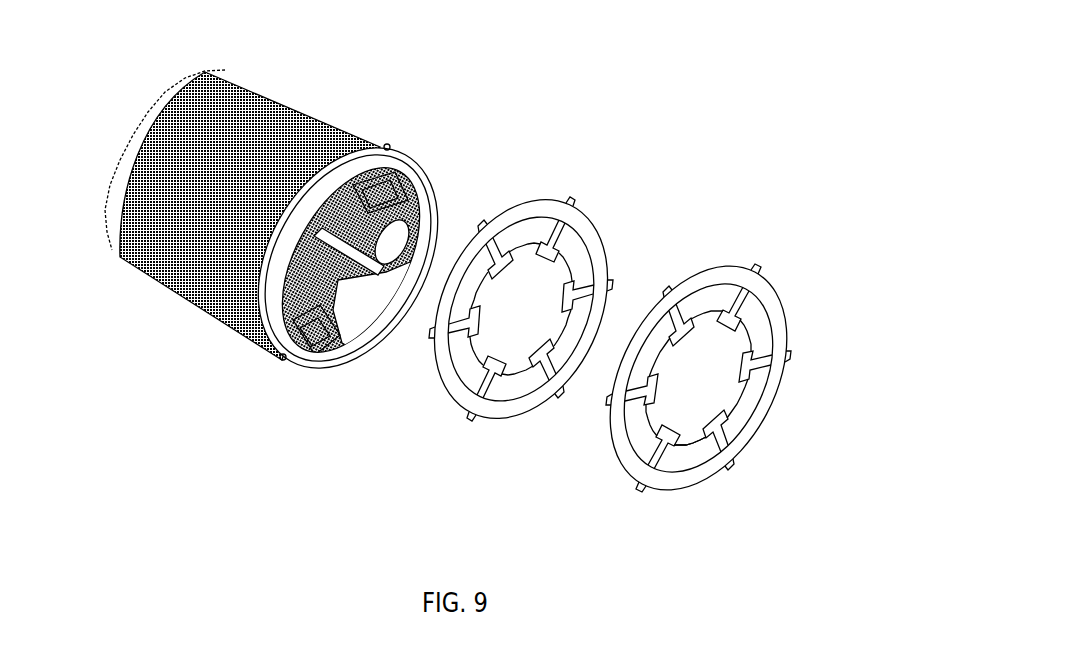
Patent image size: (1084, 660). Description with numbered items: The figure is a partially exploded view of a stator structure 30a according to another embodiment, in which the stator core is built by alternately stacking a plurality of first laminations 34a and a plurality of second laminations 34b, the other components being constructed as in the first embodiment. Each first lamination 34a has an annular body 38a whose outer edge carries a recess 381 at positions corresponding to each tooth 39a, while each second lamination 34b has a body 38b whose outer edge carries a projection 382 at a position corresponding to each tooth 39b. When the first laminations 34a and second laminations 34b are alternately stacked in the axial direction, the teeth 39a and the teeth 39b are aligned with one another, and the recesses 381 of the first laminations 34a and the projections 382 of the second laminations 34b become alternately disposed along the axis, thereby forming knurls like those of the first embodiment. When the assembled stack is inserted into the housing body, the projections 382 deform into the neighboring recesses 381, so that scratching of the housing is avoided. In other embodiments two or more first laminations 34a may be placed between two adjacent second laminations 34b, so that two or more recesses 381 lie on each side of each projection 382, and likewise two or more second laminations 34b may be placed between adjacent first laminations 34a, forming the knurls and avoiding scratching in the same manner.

The stator structure 30a is at (405, 123).
The first lamination 34a is at (568, 193).
The second lamination 34b is at (763, 260).
The annular body 38a is at (455, 385).
The body 38b is at (707, 470).
The tooth 39a is at (495, 395).
The tooth 39b is at (665, 460).
The recess 381 is at (432, 345).
The projection 382 is at (650, 487).